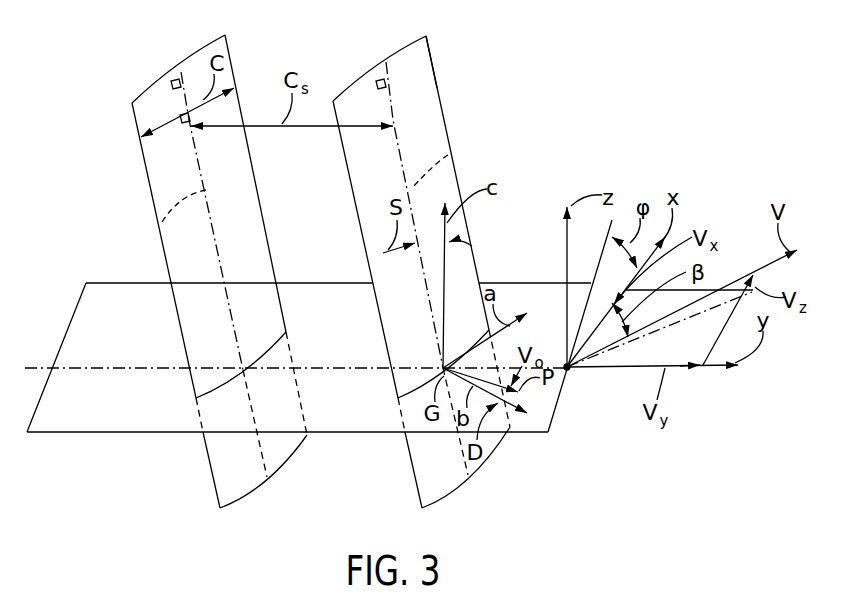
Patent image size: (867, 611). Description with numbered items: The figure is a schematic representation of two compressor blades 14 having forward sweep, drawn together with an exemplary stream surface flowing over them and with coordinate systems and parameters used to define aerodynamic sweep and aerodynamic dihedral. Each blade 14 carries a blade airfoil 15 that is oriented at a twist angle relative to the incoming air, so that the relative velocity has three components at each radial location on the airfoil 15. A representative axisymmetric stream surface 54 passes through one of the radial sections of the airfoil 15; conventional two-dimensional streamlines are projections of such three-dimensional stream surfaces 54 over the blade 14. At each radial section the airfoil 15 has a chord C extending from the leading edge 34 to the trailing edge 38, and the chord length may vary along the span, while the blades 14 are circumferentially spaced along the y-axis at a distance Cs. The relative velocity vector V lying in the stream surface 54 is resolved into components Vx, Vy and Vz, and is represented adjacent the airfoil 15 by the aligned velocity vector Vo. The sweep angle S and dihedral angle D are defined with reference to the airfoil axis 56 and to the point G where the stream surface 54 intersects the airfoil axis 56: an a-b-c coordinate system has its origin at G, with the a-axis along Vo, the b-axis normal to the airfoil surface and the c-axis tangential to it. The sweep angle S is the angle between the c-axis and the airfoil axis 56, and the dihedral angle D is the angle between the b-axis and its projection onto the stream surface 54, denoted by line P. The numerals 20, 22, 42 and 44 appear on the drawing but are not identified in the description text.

The blade 14 is at (447, 127).
The airfoil 15 is at (375, 240).
The blade root 20 is at (281, 470).
The blade tip edge 22 is at (198, 64).
The leading edge 34 is at (152, 197).
The trailing edge 38 is at (257, 187).
The blade tip 42 is at (423, 76).
The stacking line 44 is at (396, 63).
The stream surface 54 is at (87, 433).
The airfoil axis 56 is at (162, 222).